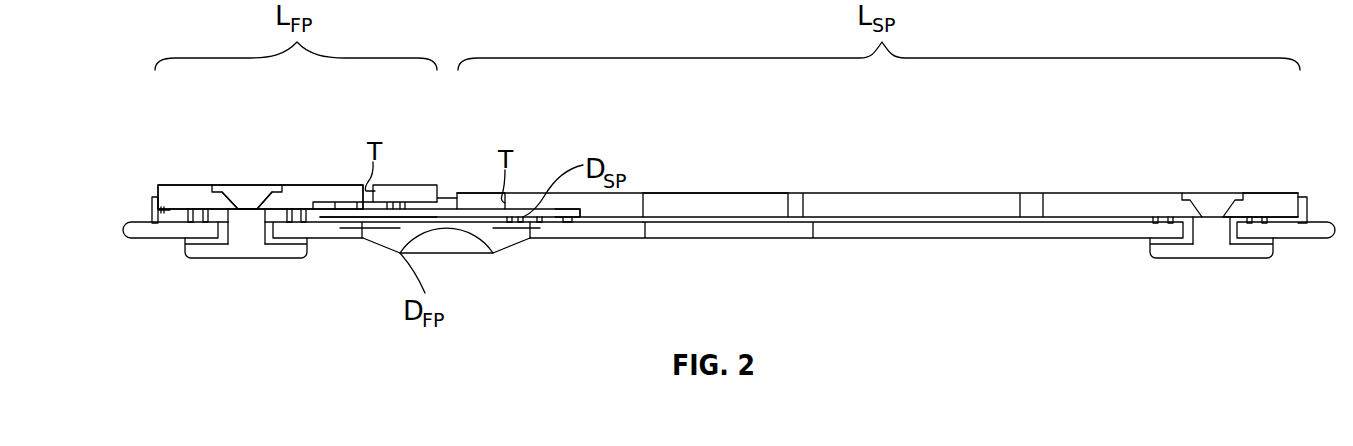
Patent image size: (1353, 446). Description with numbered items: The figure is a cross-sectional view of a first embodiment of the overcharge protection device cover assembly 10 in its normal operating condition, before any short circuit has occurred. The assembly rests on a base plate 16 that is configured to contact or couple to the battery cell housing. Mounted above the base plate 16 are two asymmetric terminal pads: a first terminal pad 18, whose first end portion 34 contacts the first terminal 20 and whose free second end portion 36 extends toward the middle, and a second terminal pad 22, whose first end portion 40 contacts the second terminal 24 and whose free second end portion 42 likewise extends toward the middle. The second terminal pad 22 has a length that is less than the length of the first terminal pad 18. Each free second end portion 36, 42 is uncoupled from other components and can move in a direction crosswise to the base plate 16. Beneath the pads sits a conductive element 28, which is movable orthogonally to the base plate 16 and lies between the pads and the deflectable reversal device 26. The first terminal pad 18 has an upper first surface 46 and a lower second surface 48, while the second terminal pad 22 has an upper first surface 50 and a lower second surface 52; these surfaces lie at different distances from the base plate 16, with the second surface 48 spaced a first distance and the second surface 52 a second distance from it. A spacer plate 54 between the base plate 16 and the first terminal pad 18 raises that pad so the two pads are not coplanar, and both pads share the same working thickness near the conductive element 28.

The overcharge protection device cover assembly 10 is at (133, 124).
The base plate 16 is at (132, 230).
The first terminal pad 18 is at (296, 176).
The first terminal 20 is at (210, 186).
The second terminal pad 22 is at (1090, 172).
The second terminal 24 is at (1208, 197).
The reversal device 26 is at (450, 240).
The conductive element 28 is at (515, 232).
The first end portion 34 is at (166, 174).
The second end portion 36 is at (419, 177).
The first end portion 40 is at (1262, 186).
The second end portion 42 is at (470, 178).
The first surface 46 is at (247, 203).
The second surface 48 is at (335, 212).
The first surface 50 is at (677, 193).
The second surface 52 is at (553, 217).
The spacer plate 54 is at (157, 210).